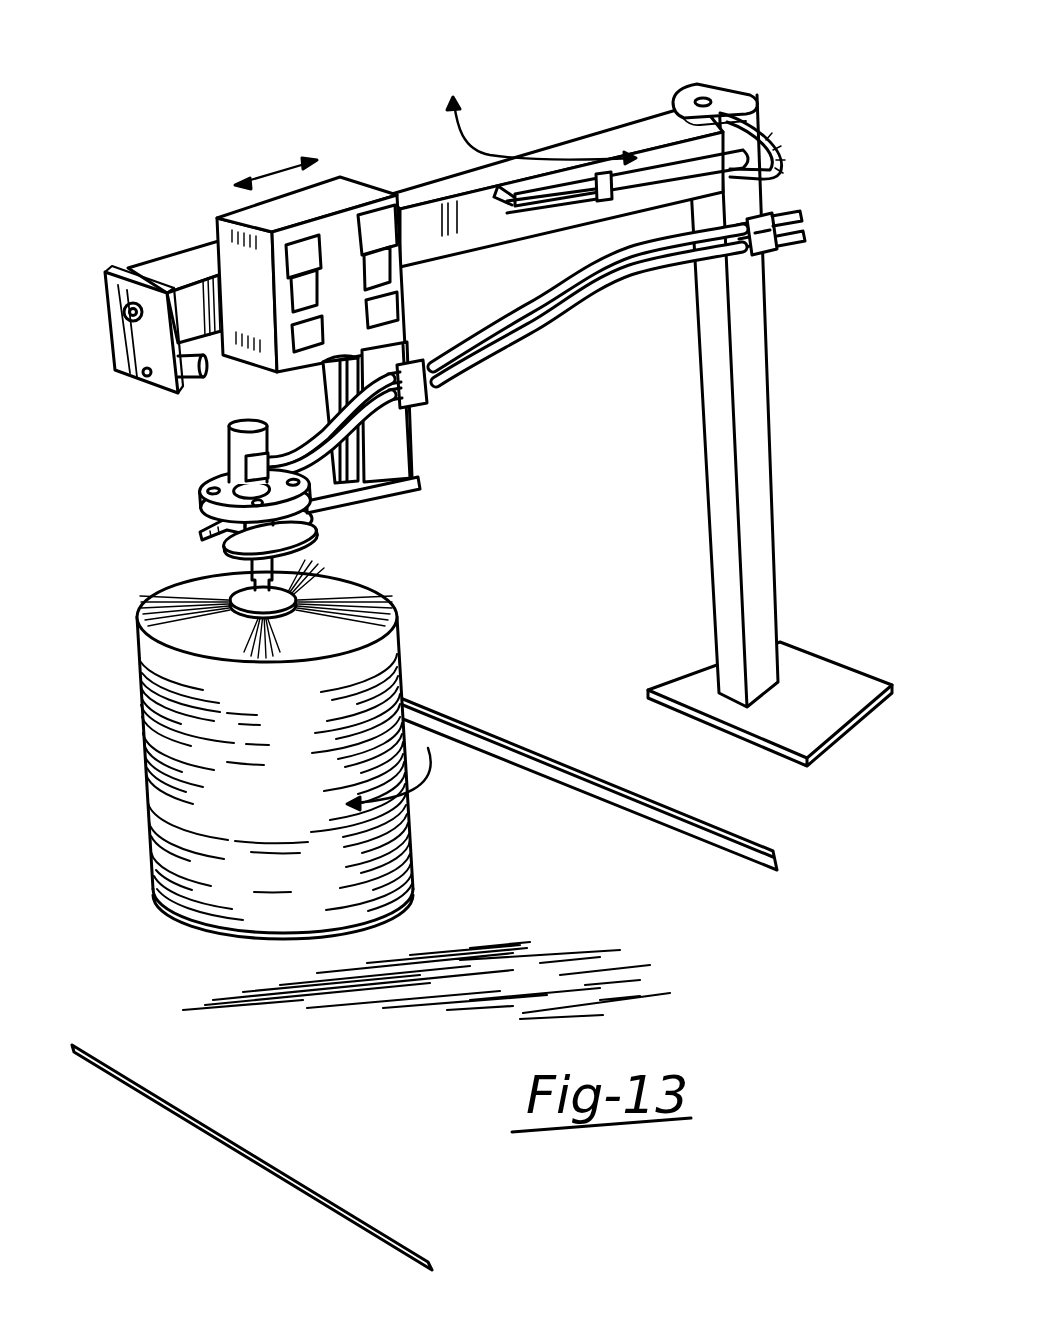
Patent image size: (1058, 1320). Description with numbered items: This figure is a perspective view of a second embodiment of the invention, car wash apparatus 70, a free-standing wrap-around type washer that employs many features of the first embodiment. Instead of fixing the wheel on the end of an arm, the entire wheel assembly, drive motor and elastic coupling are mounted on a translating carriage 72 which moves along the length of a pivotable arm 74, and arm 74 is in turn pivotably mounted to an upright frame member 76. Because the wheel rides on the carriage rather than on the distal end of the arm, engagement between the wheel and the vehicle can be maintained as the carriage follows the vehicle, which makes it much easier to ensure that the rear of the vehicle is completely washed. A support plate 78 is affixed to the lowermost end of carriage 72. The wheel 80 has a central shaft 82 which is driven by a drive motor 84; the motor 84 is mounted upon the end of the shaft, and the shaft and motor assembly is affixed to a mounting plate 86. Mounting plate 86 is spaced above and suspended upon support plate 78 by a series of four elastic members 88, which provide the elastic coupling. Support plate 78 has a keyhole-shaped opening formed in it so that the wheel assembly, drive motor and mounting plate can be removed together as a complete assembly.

The car wash apparatus 70 is at (420, 118).
The translating carriage 72 is at (335, 200).
The pivotable arm 74 is at (435, 238).
The frame member 76 is at (753, 410).
The support plate 78 is at (320, 528).
The wheel 80 is at (383, 602).
The central shaft 82 is at (290, 556).
The drive motor 84 is at (230, 430).
The mounting plate 86 is at (205, 490).
The elastic members 88 is at (200, 538).